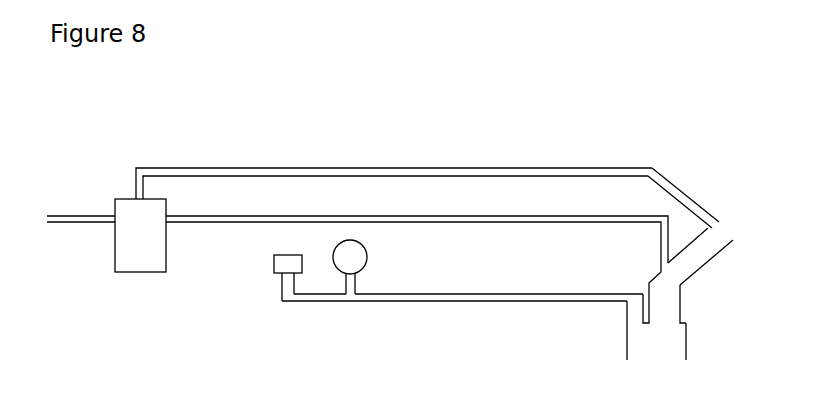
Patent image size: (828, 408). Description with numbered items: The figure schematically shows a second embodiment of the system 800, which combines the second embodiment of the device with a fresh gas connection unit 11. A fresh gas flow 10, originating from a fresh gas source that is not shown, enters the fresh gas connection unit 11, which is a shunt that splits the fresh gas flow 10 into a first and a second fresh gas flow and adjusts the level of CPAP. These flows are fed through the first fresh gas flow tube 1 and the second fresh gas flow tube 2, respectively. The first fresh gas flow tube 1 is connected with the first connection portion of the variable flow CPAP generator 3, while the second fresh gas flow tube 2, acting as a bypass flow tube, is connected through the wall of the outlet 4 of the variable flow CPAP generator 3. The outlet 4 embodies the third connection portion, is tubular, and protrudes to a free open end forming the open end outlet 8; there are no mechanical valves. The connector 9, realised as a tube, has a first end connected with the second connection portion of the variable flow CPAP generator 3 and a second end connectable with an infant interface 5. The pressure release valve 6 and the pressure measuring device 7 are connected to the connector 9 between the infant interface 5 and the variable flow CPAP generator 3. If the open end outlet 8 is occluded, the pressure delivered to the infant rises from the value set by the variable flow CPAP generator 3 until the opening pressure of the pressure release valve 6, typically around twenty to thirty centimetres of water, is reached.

The system 800 is at (334, 117).
The fresh gas flow 10 is at (92, 218).
The fresh gas connection unit 11 is at (138, 253).
The second fresh gas flow tube 2 is at (446, 172).
The first fresh gas flow tube 1 is at (447, 218).
The open end outlet 8 is at (733, 227).
The outlet 4 is at (693, 263).
The variable flow CPAP generator 3 is at (663, 293).
The connector 9 is at (658, 332).
The infant interface 5 is at (662, 367).
The pressure release valve 6 is at (285, 262).
The pressure measuring device 7 is at (353, 258).